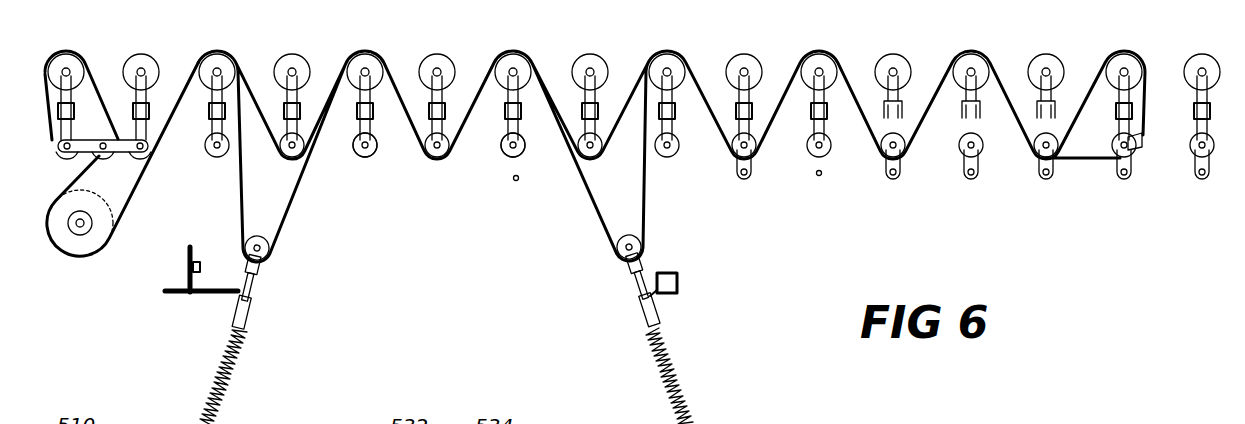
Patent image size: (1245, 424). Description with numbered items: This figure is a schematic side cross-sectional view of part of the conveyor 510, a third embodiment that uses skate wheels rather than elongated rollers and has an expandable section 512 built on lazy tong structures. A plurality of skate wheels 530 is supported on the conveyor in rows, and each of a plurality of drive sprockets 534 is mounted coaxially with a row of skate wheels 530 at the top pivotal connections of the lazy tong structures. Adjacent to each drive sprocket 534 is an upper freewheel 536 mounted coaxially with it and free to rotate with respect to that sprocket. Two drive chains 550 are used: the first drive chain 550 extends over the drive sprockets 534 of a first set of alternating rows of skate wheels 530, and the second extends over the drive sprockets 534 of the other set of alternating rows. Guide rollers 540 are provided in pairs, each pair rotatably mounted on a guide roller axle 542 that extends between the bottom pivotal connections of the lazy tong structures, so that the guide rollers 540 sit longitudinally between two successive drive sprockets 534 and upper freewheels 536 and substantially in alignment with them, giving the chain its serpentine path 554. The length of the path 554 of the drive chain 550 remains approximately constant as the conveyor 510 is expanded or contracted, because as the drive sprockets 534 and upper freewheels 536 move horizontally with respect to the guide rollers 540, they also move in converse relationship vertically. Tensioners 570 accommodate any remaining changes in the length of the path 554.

The conveyor 510 is at (172, 48).
The expandable section 512 is at (915, 160).
The skate wheels 530 is at (293, 53).
The drive sprockets 534 is at (366, 53).
The upper freewheel 536 is at (514, 53).
The guide rollers 540 is at (381, 148).
The guide roller axle 542 is at (517, 147).
The drive chain 550 is at (718, 127).
The path 554 is at (858, 140).
The tensioners 570 is at (217, 363).